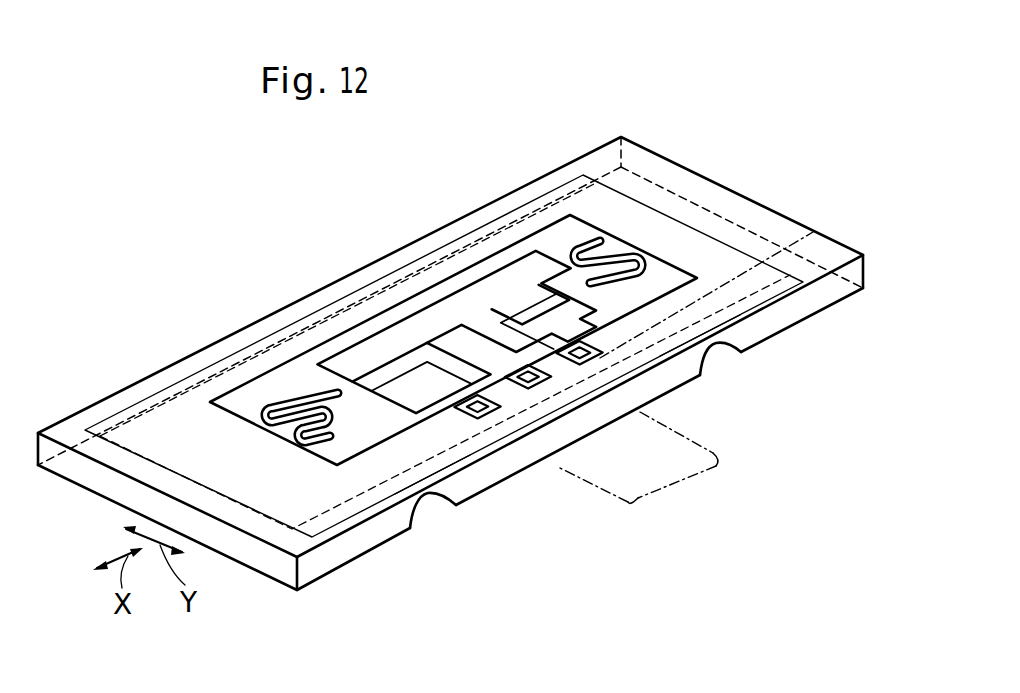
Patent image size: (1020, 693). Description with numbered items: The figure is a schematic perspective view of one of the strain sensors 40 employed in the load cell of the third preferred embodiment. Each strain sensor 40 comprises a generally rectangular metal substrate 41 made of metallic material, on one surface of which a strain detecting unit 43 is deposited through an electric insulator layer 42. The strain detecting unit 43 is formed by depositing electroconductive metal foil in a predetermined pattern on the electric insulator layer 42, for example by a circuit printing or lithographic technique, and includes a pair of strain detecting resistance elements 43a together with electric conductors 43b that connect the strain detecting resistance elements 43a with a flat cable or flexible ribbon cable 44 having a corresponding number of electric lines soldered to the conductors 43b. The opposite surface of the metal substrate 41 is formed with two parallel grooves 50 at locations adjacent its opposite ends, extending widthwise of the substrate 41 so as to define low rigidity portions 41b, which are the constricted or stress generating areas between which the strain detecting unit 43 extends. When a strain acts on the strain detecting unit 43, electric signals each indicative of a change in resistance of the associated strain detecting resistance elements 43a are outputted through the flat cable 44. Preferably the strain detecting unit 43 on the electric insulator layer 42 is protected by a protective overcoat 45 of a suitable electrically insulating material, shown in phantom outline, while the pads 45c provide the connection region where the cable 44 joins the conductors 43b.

The strain sensor 40 is at (702, 137).
The metal substrate 41 is at (738, 228).
The low rigidity portions 41b is at (688, 323).
The electric insulator layer 42 is at (541, 222).
The strain detecting unit 43 is at (424, 300).
The strain detecting resistance elements 43a is at (568, 240).
The electric conductors 43b is at (505, 332).
The flat cable 44 is at (613, 498).
The protective overcoat 45 is at (784, 268).
The connection pads 45c is at (485, 412).
The grooves 50 is at (716, 346).